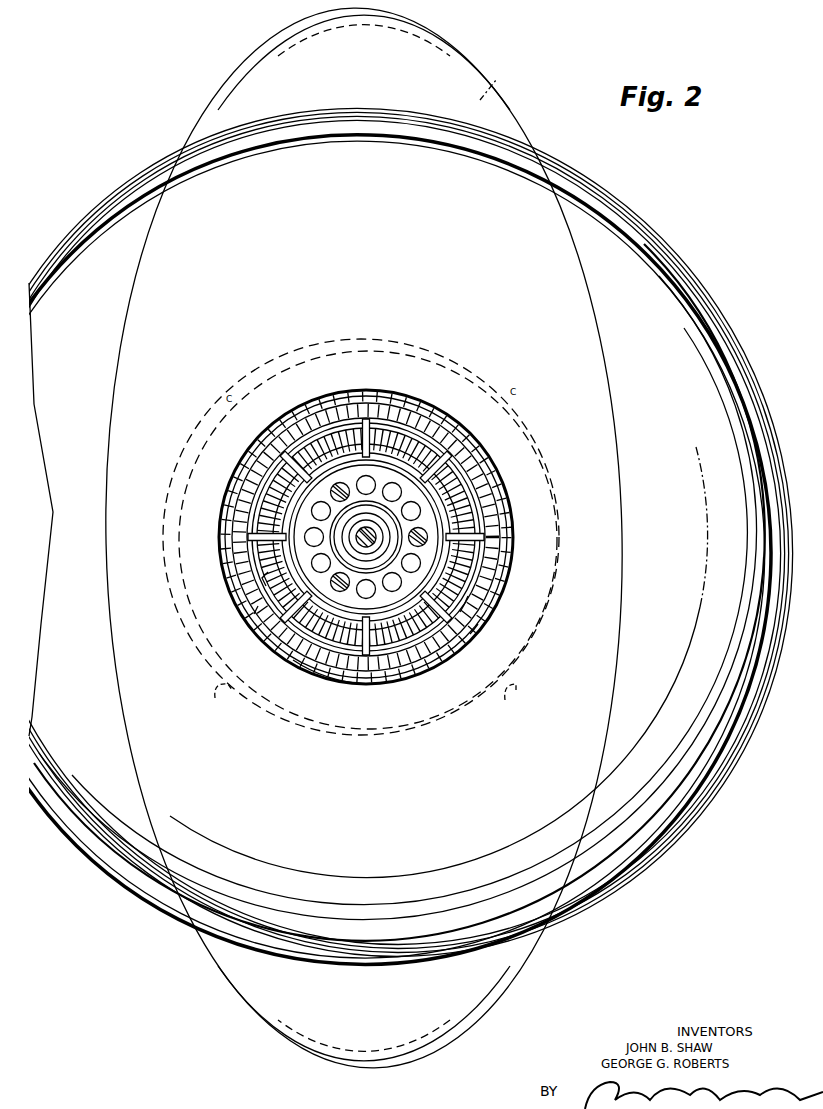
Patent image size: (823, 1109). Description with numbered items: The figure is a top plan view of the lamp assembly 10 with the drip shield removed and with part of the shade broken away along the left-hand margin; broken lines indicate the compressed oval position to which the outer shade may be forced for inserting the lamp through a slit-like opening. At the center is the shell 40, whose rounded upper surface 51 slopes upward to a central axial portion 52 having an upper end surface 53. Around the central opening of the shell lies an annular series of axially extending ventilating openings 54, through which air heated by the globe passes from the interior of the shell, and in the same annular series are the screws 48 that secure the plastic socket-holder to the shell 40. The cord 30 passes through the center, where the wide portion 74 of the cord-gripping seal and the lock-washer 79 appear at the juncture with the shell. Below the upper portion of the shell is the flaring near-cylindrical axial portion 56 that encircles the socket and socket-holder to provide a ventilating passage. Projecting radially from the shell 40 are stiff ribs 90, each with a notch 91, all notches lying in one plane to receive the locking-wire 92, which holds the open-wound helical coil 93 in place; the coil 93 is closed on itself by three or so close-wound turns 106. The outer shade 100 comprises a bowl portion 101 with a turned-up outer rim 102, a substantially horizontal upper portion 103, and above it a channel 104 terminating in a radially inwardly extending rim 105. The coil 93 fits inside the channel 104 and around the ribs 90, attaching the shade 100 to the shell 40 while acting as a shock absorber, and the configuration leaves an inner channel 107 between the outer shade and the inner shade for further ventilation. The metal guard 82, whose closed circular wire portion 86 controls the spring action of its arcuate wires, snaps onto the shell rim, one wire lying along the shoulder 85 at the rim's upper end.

The lamp assembly 10 is at (588, 151).
The outer shade 100 is at (452, 70).
The bowl portion 101 is at (496, 80).
The outer rim 102 is at (330, 13).
The channel 104 is at (400, 402).
The open-wound helical coil of wire 93 is at (474, 458).
The locking-wire 92 is at (437, 425).
The notch 91 is at (280, 442).
The ribs 90 is at (243, 492).
The rim 105 is at (485, 525).
The upper portion 103 is at (505, 565).
The close-wound turns 106 is at (322, 684).
The inner channel 107 is at (485, 610).
The upper surface 51 is at (473, 640).
The axial portion 56 is at (262, 578).
The shell 40 is at (254, 612).
The shoulder 85 is at (300, 740).
The circular wire portion 86 is at (196, 660).
The metal guard 82 is at (215, 700).
The cord 30 is at (366, 530).
The lock-washer 79 is at (378, 520).
The wide portion 74 is at (396, 538).
The upper end surface 53 is at (392, 580).
The central axial portion 52 is at (404, 598).
The ventilating openings 54 is at (373, 600).
The screws 48 is at (330, 492).